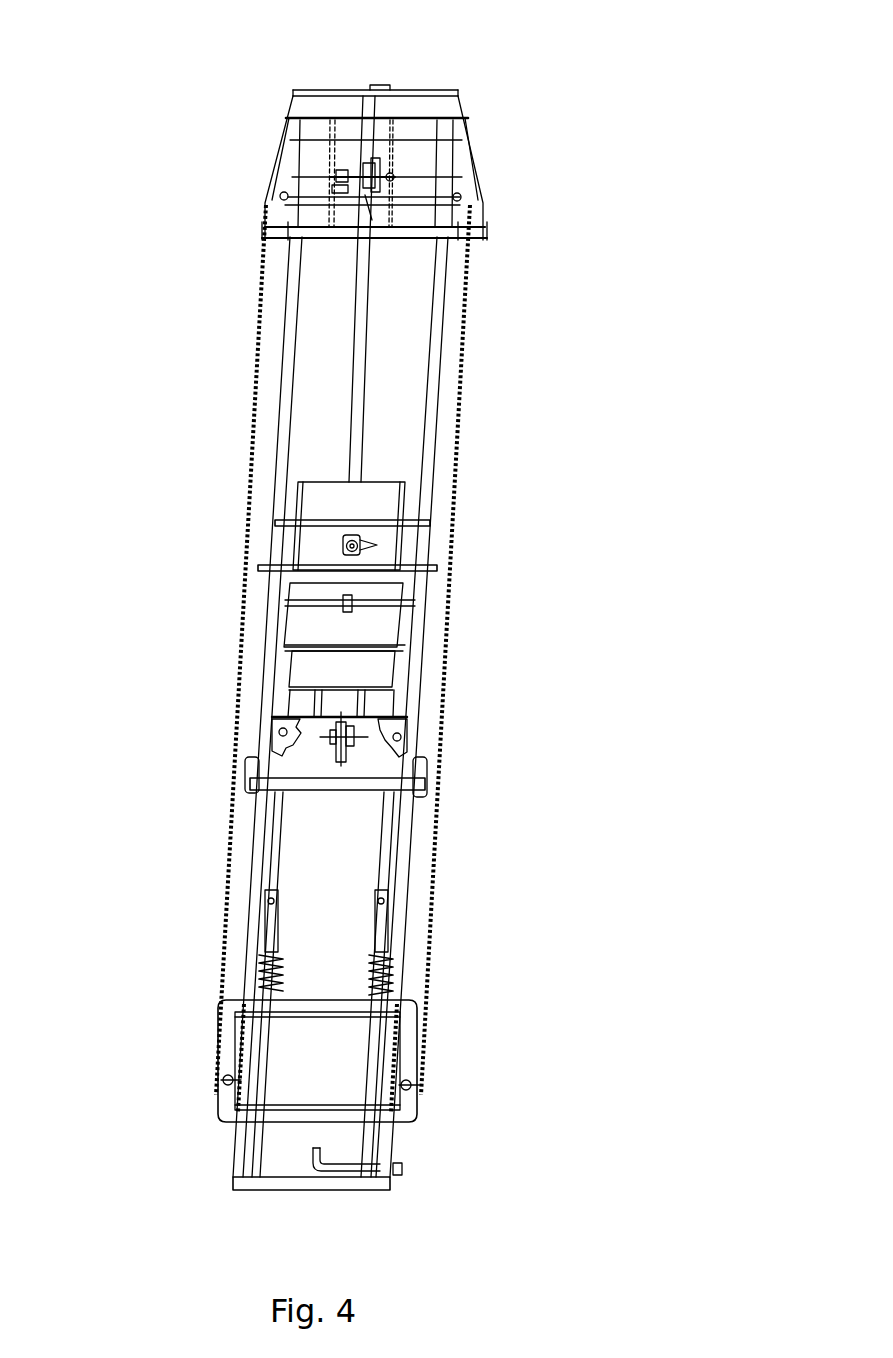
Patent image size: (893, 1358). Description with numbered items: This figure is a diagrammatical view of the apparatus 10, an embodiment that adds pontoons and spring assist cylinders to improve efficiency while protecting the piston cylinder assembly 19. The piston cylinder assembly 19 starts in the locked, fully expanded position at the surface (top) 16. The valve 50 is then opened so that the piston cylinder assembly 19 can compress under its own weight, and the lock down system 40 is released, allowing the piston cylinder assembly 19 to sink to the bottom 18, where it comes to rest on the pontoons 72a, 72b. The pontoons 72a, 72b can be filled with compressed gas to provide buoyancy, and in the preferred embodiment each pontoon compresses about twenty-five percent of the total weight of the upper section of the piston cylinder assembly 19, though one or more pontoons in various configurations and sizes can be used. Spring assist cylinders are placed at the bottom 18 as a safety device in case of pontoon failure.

The apparatus 10 is at (569, 176).
The surface (top) 16 is at (437, 52).
The bottom 18 is at (207, 1184).
The piston cylinder assembly 19 is at (432, 617).
The lock down system 40 is at (300, 998).
The valve 50 is at (409, 1166).
The pontoon 72a is at (430, 762).
The pontoon 72b is at (252, 782).